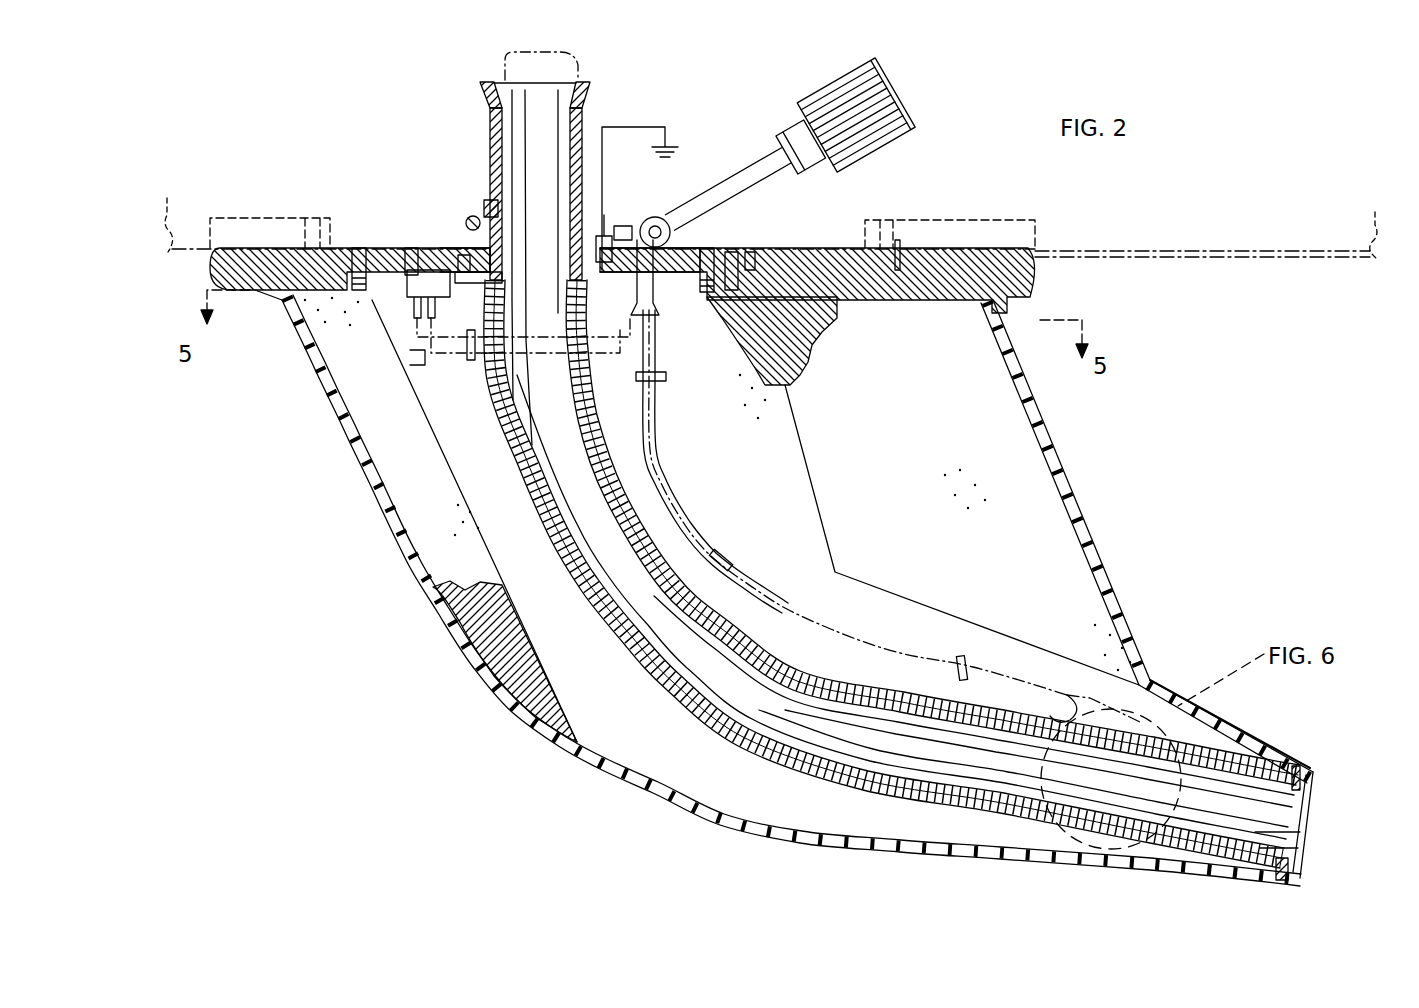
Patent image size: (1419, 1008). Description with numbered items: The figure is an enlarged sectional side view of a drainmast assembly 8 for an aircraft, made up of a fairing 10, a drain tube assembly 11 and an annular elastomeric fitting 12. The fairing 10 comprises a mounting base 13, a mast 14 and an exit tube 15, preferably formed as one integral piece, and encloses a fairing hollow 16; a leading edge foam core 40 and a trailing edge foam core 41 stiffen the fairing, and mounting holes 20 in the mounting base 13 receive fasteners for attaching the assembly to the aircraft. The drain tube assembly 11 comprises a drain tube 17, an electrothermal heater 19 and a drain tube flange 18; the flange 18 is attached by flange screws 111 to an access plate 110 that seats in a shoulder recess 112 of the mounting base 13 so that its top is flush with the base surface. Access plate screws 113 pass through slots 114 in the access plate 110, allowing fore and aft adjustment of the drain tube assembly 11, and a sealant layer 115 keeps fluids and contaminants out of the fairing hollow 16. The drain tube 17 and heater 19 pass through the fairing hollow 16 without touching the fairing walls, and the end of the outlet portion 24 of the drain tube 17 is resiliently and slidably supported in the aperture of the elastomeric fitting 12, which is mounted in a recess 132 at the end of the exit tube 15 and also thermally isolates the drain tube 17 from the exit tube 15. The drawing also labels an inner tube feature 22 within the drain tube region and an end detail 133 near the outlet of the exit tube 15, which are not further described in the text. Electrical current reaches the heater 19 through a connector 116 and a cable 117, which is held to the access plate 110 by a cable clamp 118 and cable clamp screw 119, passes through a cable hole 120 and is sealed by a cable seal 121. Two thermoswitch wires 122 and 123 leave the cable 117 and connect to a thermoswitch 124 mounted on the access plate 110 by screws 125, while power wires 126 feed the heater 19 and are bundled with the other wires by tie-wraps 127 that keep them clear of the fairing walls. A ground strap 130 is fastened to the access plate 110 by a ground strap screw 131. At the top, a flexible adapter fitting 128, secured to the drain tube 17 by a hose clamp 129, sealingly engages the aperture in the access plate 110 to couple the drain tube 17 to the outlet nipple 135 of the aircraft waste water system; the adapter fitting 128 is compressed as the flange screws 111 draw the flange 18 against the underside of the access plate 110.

The drainmast assembly 8 is at (848, 590).
The fairing 10 is at (791, 590).
The drain tube assembly 11 is at (892, 584).
The elastomeric fitting 12 is at (1313, 783).
The mounting base 13 is at (958, 255).
The mast 14 is at (1068, 473).
The exit tube 15 is at (1222, 718).
The fairing hollow 16 is at (733, 793).
The drain tube 17 is at (863, 773).
The drain tube flange 18 is at (470, 250).
The electrothermal heater 19 is at (790, 770).
The mounting holes 20 is at (890, 245).
The inner tube 22 is at (553, 197).
The outlet portion 24 is at (1273, 842).
The leading edge foam core 40 is at (383, 427).
The trailing edge foam core 41 is at (1000, 410).
The access plate 110 is at (400, 250).
The flange screws 111 is at (413, 370).
The shoulder recess 112 is at (290, 293).
The access plate screws 113 is at (360, 246).
The slots 114 is at (400, 246).
The sealant layer 115 is at (793, 253).
The connector 116 is at (840, 93).
The cable 117 is at (757, 165).
The cable clamp 118 is at (663, 220).
The cable clamp screw 119 is at (628, 234).
The cable hole 120 is at (715, 246).
The cable seal 121 is at (660, 280).
The thermoswitch wire 122 is at (420, 343).
The thermoswitch wire 123 is at (470, 362).
The thermoswitch 124 is at (410, 300).
The screws 125 is at (460, 246).
The power wires 126 is at (657, 413).
The tie-wraps 127 is at (667, 378).
The adapter fitting 128 is at (490, 110).
The hose clamp 129 is at (472, 214).
The ground strap 130 is at (627, 127).
The ground strap screw 131 is at (605, 236).
The recess 132 is at (1314, 772).
The end cap 133 is at (1273, 887).
The outlet nipple 135 is at (583, 63).